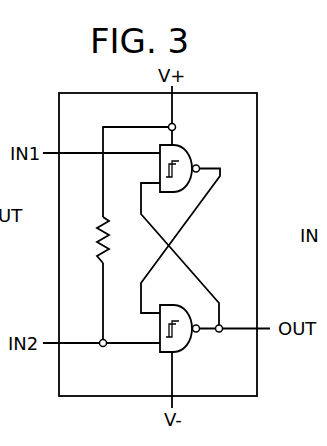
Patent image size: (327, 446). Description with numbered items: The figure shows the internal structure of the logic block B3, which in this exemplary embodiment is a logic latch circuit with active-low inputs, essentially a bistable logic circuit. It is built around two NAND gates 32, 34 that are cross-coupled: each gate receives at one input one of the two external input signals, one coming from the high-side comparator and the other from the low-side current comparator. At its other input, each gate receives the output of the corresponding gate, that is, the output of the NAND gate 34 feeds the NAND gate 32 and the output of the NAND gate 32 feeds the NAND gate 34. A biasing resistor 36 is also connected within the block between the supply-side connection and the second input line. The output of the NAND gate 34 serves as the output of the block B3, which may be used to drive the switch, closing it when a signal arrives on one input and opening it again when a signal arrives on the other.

The NAND gate 32 is at (183, 146).
The NAND gate 34 is at (188, 353).
The biasing resistor 36 is at (97, 251).
The logic block B3 is at (256, 97).